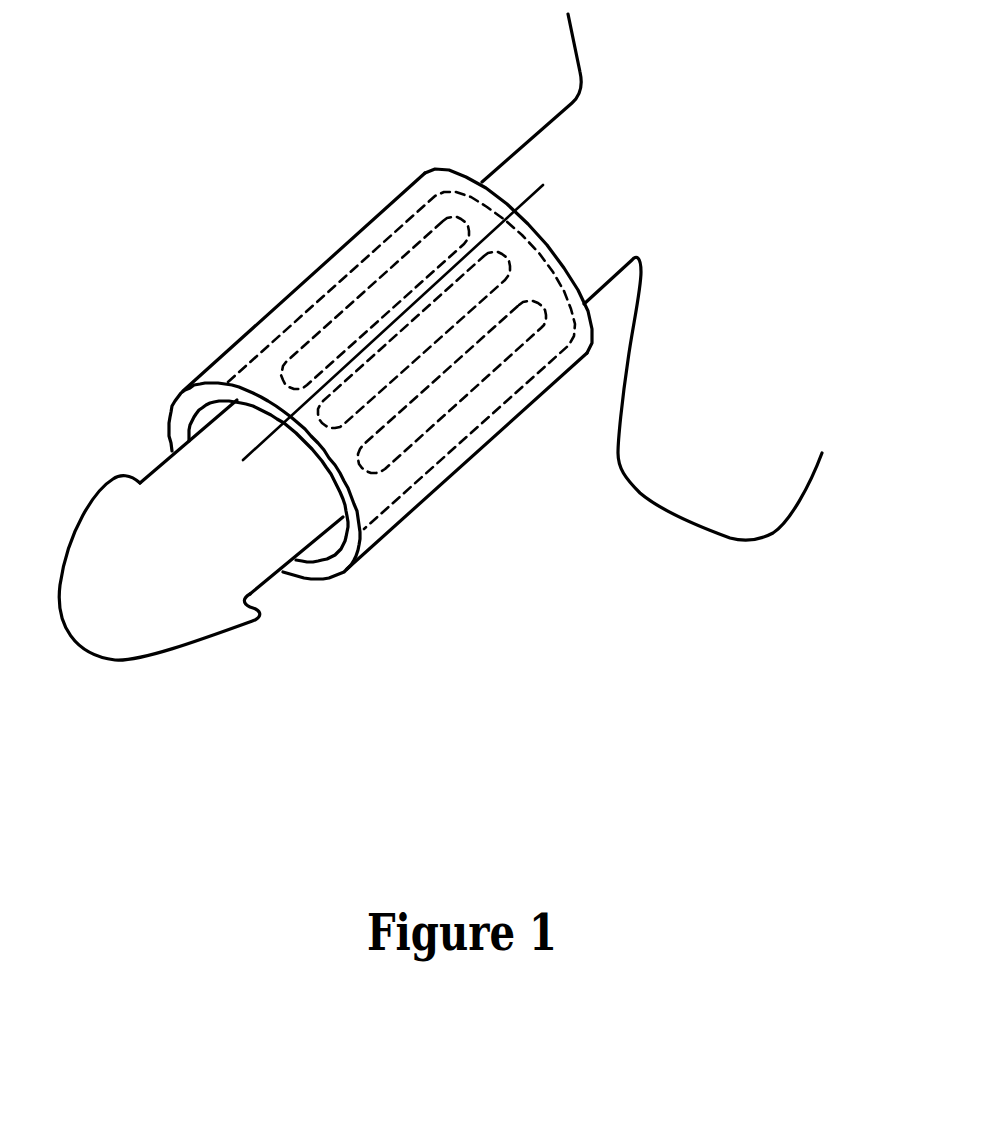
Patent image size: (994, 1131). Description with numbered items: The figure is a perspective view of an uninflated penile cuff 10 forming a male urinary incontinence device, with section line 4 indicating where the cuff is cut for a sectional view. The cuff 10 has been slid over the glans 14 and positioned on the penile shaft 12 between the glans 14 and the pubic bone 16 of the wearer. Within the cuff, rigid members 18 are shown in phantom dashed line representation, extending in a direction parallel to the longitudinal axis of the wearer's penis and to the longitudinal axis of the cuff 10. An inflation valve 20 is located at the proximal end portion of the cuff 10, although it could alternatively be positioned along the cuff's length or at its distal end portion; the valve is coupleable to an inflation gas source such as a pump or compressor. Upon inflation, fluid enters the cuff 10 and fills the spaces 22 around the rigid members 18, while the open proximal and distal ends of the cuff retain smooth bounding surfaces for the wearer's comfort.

The penile cuff 10 is at (208, 340).
The penile shaft 12 is at (260, 540).
The glans 14 is at (173, 620).
The pubic bone 16 is at (571, 40).
The rigid members 18 is at (438, 407).
The inflation valve 20 is at (397, 207).
The spaces 22 is at (373, 422).
The section line 4- 4 is at (543, 185).